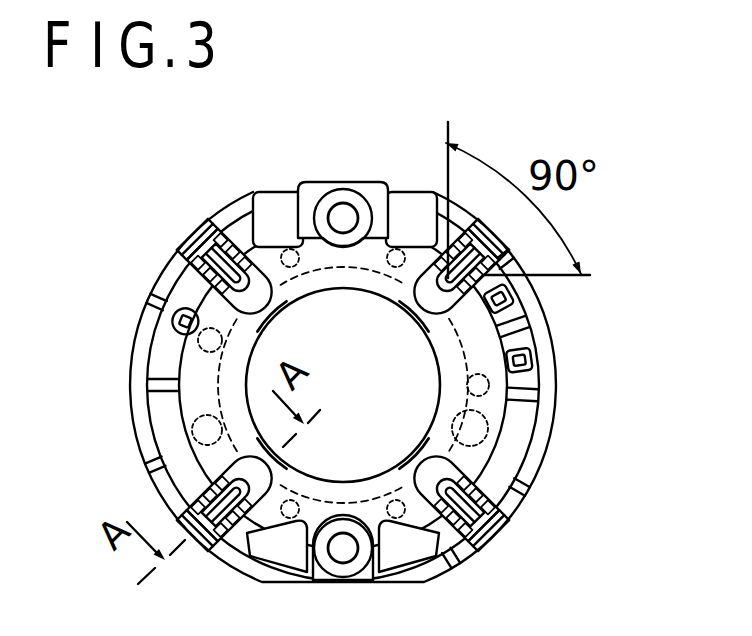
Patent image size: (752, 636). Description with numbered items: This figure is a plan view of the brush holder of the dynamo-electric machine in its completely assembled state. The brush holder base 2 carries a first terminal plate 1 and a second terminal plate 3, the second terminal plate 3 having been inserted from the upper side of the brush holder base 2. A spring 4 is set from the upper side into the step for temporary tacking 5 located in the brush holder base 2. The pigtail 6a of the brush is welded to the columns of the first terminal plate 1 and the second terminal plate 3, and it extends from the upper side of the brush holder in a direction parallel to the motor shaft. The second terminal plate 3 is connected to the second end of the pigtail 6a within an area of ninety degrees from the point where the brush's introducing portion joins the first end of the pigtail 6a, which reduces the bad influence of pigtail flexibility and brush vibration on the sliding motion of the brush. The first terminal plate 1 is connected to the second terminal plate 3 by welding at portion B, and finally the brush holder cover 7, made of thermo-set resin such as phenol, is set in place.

The first terminal plate 1 is at (198, 236).
The brush holder base 2 is at (537, 349).
The second terminal plate 3 is at (490, 531).
The spring 4 is at (465, 550).
The step for temporary tacking 5 is at (433, 465).
The pigtail 6a is at (403, 482).
The brush holder cover 7 is at (187, 353).
The portion B is at (477, 424).